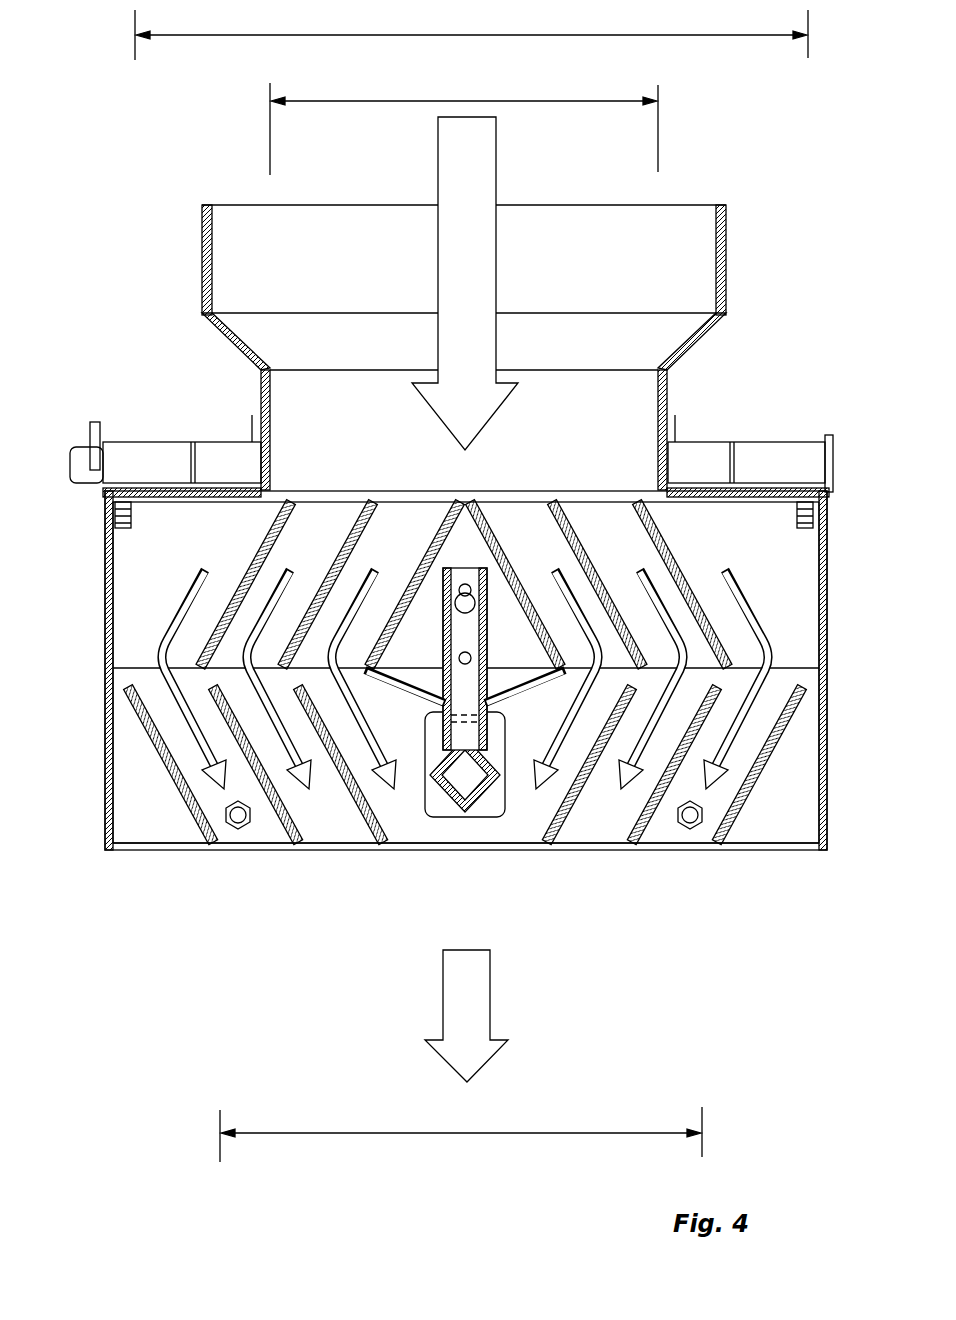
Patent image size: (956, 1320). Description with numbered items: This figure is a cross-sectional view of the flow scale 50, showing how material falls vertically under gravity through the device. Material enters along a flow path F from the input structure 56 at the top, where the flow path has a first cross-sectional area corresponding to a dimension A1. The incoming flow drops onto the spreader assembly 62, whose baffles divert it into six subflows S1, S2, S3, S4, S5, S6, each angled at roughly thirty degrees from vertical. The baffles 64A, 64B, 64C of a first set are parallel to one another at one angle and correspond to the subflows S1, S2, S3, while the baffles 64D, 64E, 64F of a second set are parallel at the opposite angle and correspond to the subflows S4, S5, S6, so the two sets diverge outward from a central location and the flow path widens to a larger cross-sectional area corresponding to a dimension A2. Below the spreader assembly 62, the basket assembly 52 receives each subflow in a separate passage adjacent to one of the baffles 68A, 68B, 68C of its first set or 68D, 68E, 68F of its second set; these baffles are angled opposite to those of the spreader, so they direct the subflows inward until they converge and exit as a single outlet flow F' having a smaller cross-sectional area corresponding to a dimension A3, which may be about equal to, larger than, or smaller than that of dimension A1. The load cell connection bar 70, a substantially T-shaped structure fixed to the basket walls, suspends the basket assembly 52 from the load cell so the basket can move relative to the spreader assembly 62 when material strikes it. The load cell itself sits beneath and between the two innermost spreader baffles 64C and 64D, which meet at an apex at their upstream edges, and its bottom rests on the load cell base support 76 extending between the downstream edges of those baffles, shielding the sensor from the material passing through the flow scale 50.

The flow scale 50 is at (790, 403).
The basket assembly 52 is at (150, 818).
The input structure 56 is at (730, 237).
The spreader assembly 62 is at (150, 553).
The baffle 64A is at (258, 568).
The baffle 64B is at (330, 580).
The baffle 64C is at (412, 575).
The baffle 64D is at (513, 572).
The baffle 64E is at (590, 562).
The baffle 64F is at (670, 553).
The baffle 68A is at (204, 840).
The baffle 68B is at (287, 840).
The baffle 68C is at (387, 840).
The baffle 68D is at (545, 840).
The baffle 68E is at (640, 835).
The baffle 68F is at (712, 843).
The load cell connection bar 70 is at (458, 578).
The load cell base support 76 is at (503, 797).
The subflow S1 is at (240, 784).
The subflow S2 is at (310, 784).
The subflow S3 is at (397, 784).
The subflow S4 is at (540, 785).
The subflow S5 is at (627, 786).
The subflow S6 is at (720, 785).
The flow path F is at (482, 283).
The outlet flow F' is at (500, 1016).
The dimension A1 is at (464, 120).
The dimension A2 is at (471, 31).
The dimension A3 is at (461, 1130).